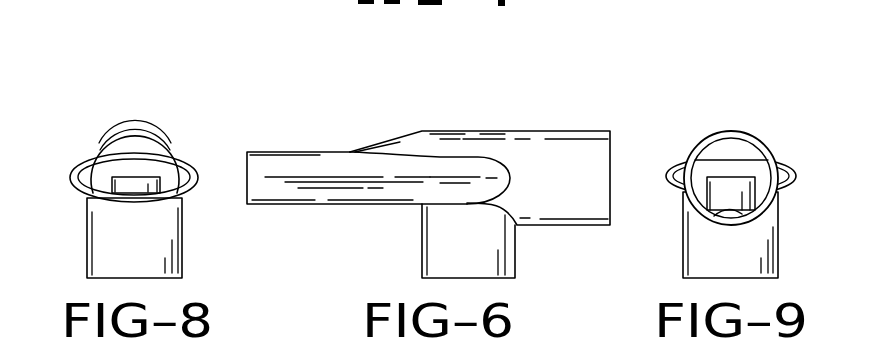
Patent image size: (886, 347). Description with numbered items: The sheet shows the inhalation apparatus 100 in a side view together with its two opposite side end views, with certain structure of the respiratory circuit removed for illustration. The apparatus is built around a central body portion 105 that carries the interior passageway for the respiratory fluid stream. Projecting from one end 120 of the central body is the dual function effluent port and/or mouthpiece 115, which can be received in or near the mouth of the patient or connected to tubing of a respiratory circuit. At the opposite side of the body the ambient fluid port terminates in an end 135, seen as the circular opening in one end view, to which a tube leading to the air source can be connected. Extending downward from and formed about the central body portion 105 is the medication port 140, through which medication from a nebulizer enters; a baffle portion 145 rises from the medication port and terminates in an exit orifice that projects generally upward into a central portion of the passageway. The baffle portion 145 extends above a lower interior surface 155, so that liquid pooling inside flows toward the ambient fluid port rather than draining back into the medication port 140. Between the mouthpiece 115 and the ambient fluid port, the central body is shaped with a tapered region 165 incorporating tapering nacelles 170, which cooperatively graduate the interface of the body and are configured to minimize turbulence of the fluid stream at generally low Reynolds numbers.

In FIG. 8, the inhalation apparatus 100 is at (121, 128).
In FIG. 6, the inhalation apparatus 100 is at (487, 126).
In FIG. 9, the inhalation apparatus 100 is at (788, 148).
In FIG. 6, the central body portion 105 is at (431, 131).
In FIG. 8, the dual function effluent port and/or mouthpiece 115 is at (87, 160).
In FIG. 6, the dual function effluent port and/or mouthpiece 115 is at (252, 151).
In FIG. 6, the end of the central body 120 is at (317, 151).
In FIG. 9, the end of the ambient fluid port 135 is at (703, 139).
In FIG. 8, the medication port 140 is at (183, 232).
In FIG. 6, the medication port 140 is at (422, 250).
In FIG. 9, the medication port 140 is at (683, 236).
In FIG. 8, the baffle portion 145 is at (110, 185).
In FIG. 9, the baffle portion 145 is at (753, 184).
In FIG. 9, the interior surface 155 is at (735, 213).
In FIG. 8, the tapered region 165 is at (148, 143).
In FIG. 6, the tapered region 165 is at (376, 143).
In FIG. 9, the tapered region 165 is at (726, 150).
In FIG. 6, the tapering nacelles 170 is at (498, 178).
In FIG. 9, the tapering nacelles 170 is at (669, 174).